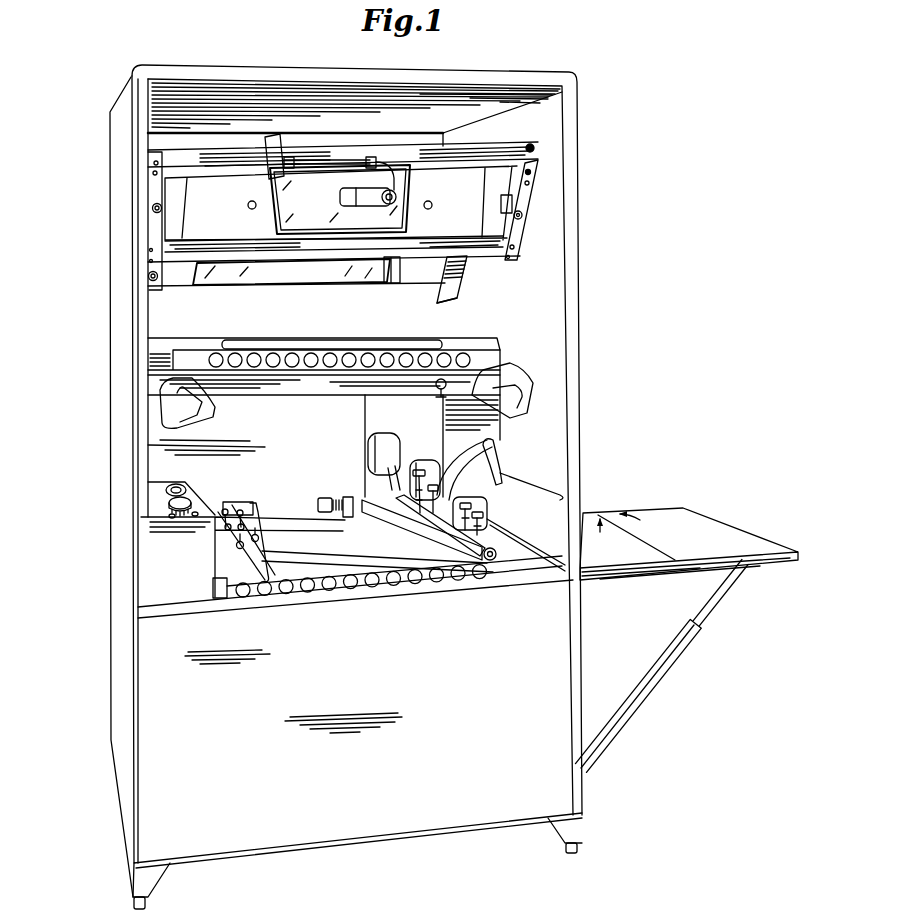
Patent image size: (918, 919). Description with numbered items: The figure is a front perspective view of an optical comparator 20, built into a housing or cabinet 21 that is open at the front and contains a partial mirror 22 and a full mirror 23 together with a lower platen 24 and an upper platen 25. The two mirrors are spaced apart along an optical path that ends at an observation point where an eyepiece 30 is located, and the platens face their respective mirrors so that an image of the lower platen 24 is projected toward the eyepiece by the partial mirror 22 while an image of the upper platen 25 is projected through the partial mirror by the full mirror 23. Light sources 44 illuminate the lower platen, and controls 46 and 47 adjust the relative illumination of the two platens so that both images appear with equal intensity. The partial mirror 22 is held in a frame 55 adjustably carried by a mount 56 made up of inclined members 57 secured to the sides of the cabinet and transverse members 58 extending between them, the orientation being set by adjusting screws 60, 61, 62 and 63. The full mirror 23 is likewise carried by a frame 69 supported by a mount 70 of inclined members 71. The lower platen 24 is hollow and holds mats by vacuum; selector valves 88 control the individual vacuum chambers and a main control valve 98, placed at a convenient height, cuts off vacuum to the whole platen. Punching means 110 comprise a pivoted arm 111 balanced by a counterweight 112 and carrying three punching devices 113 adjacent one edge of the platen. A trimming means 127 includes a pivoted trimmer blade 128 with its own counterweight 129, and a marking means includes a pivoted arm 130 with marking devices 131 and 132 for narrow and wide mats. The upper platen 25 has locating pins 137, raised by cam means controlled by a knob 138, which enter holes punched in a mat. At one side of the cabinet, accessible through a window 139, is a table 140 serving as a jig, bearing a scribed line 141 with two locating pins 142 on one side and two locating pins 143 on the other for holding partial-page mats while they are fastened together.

The optical comparator 20 is at (109, 153).
The housing or cabinet 21 is at (125, 193).
The partial mirror 22 is at (340, 199).
The full mirror 23 is at (291, 272).
The first or lower platen 24 is at (230, 575).
The second or upper platen 25 is at (262, 341).
The eyepiece 30 is at (358, 207).
The light sources 44 is at (519, 373).
The control 46 is at (184, 498).
The control 47 is at (175, 484).
The frame 55 is at (358, 247).
The mount 56 is at (327, 264).
The inclined members 57 is at (155, 237).
The transverse members 58 is at (214, 160).
The adjusting screw 60 is at (154, 211).
The adjusting screw 61 is at (149, 278).
The adjusting screw 62 is at (522, 215).
The adjusting screw 63 is at (530, 145).
The frame 69 is at (396, 280).
The mount 70 is at (459, 297).
The inclined members 71 is at (466, 278).
The selector valves 88 is at (330, 368).
The main control valve 98 is at (217, 367).
The punching means 110 is at (418, 521).
The pivoted arm 111 is at (472, 545).
The counterweight 112 is at (370, 444).
The punching devices 113 is at (408, 484).
The trimming means 127 is at (505, 450).
The trimmer blade 128 is at (466, 456).
The counterweight 129 is at (422, 458).
The pivoted arm 130 is at (258, 518).
The marking devices 131 is at (244, 509).
The marking devices 132 is at (226, 508).
The locating pins 137 is at (440, 341).
The knob 138 is at (436, 385).
The window 139 is at (562, 497).
The table 140 is at (695, 513).
The line 141 is at (673, 557).
The locating pins 142 is at (648, 554).
The locating pins 143 is at (665, 555).